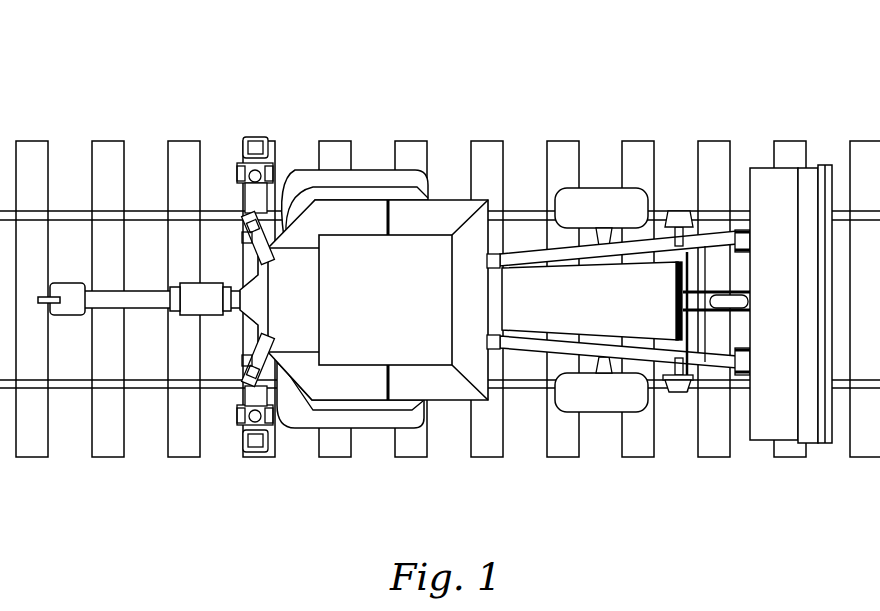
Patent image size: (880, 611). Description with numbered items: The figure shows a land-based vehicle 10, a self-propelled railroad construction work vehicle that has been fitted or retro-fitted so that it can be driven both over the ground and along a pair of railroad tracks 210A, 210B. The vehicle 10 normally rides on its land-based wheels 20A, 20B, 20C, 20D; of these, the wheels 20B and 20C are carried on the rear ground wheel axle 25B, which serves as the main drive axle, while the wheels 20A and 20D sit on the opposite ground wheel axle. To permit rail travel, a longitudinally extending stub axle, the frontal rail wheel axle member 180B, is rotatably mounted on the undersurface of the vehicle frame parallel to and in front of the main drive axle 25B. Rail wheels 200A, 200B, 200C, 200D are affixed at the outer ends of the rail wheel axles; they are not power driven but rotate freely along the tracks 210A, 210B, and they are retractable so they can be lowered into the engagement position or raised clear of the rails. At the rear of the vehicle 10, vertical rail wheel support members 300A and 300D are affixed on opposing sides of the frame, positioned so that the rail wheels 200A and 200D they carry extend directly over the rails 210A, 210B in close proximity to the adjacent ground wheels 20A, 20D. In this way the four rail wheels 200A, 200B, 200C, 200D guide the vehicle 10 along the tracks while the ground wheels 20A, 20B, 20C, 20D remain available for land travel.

The land-based vehicle 10 is at (377, 407).
The land-based wheel 20A is at (301, 418).
The land-based wheel 20B is at (607, 398).
The land-based wheel 20C is at (613, 202).
The land-based wheel 20D is at (305, 180).
The rear ground wheel axle 25B is at (598, 358).
The frontal rail wheel axle member 180B is at (713, 372).
The rail wheel 200A is at (243, 378).
The rail wheel 200B is at (680, 392).
The rail wheel 200C is at (678, 210).
The rail wheel 200D is at (240, 213).
The railroad track 210A is at (77, 383).
The railroad track 210B is at (76, 209).
The vertical rail wheel support member 300A is at (257, 452).
The vertical rail wheel support member 300D is at (238, 137).